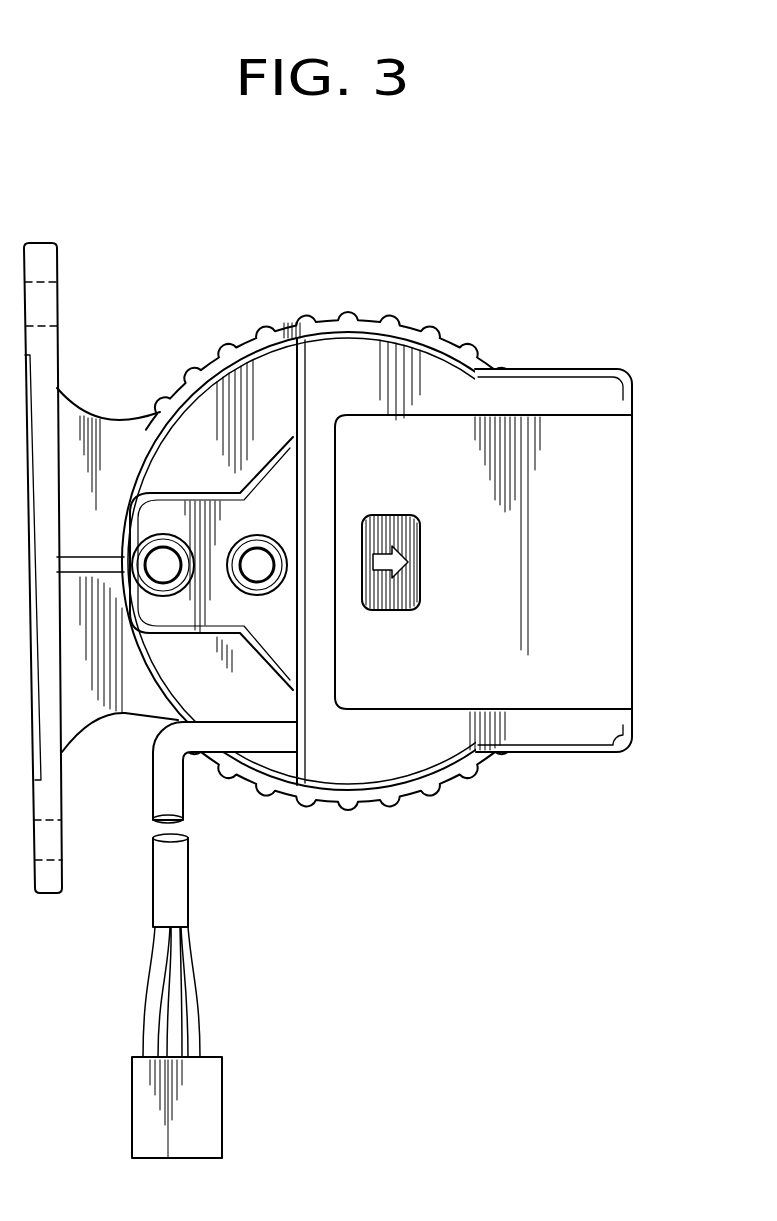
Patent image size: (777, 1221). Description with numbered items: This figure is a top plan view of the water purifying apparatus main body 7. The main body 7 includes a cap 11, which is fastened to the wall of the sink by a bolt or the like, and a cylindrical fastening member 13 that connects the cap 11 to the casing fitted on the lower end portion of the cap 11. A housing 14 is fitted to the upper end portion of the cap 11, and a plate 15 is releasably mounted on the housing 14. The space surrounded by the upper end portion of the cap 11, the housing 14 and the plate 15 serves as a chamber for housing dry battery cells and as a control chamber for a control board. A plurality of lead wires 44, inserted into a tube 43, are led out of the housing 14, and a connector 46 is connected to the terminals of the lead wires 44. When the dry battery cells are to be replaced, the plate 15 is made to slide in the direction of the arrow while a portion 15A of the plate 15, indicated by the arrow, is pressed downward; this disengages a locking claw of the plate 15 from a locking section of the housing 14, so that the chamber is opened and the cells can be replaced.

The water purifying apparatus main body 7 is at (484, 330).
The cap 11 is at (178, 457).
The cylindrical fastening member 13 is at (341, 812).
The housing 14 is at (358, 355).
The plate 15 is at (600, 495).
The portion of the plate 15A is at (412, 532).
The tube 43 is at (183, 870).
The lead wires 44 is at (165, 1000).
The connector 46 is at (205, 1115).